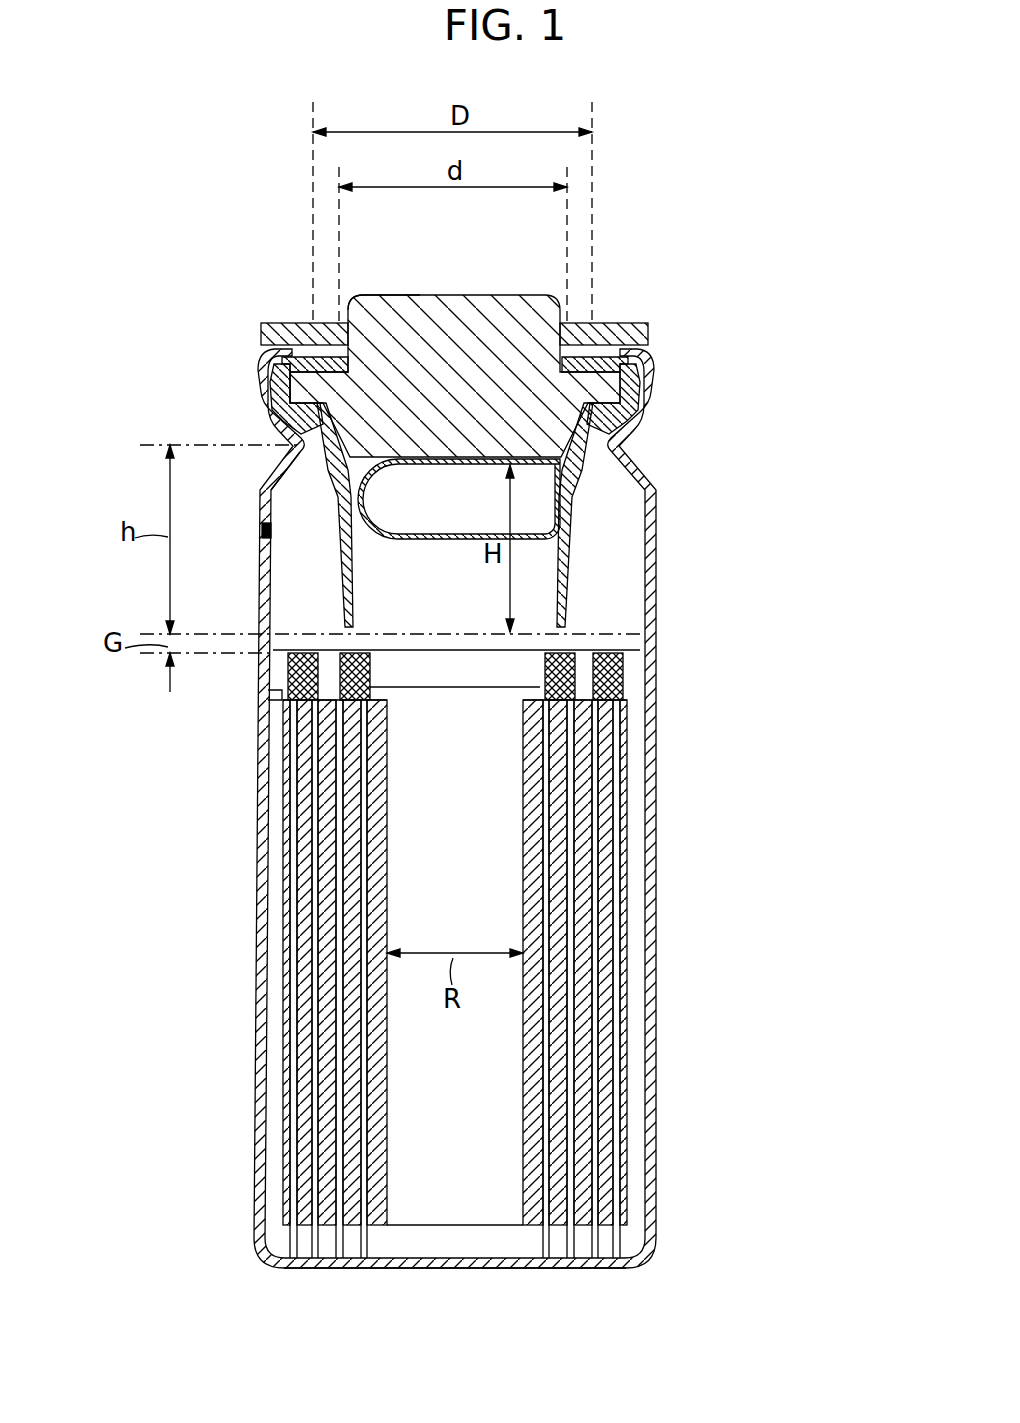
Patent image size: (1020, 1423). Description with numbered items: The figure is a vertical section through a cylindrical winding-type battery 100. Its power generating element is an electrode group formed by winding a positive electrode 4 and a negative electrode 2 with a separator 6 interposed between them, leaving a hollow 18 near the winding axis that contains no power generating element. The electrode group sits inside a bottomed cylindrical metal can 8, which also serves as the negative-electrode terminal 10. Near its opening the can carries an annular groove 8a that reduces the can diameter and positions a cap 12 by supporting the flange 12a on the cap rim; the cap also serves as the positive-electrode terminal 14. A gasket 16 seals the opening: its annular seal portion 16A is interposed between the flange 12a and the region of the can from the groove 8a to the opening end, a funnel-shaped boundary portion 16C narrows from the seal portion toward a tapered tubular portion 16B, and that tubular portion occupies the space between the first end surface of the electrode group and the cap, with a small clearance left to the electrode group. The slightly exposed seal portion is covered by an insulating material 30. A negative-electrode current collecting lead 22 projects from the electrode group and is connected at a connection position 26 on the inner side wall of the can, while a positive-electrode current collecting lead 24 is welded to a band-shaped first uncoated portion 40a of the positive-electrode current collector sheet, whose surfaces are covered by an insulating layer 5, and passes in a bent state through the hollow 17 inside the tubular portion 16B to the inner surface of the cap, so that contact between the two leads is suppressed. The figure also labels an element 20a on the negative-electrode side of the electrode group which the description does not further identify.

The cylindrical winding-type battery 100 is at (185, 273).
The negative electrode 2 is at (580, 832).
The positive electrode 4 is at (607, 920).
The insulating layer 5 is at (357, 653).
The separator 6 is at (622, 672).
The metal can 8 is at (656, 520).
The annular groove 8a is at (296, 437).
The negative-electrode terminal 10 is at (455, 1308).
The cap 12 is at (478, 312).
The flange 12a is at (262, 374).
The positive-electrode terminal 14 is at (384, 262).
The gasket 16 is at (523, 492).
The annular seal portion 16A is at (652, 388).
The tubular portion 16B is at (580, 530).
The boundary portion 16C is at (606, 445).
The hollow 17 is at (487, 683).
The hollow 18 is at (455, 1255).
The current collector 20a is at (293, 905).
The negative-electrode current collecting lead 22 is at (266, 699).
The positive-electrode current collecting lead 24 is at (417, 535).
The connection position 26 is at (262, 535).
The insulating material 30 is at (610, 332).
The first uncoated portion 40a is at (372, 672).